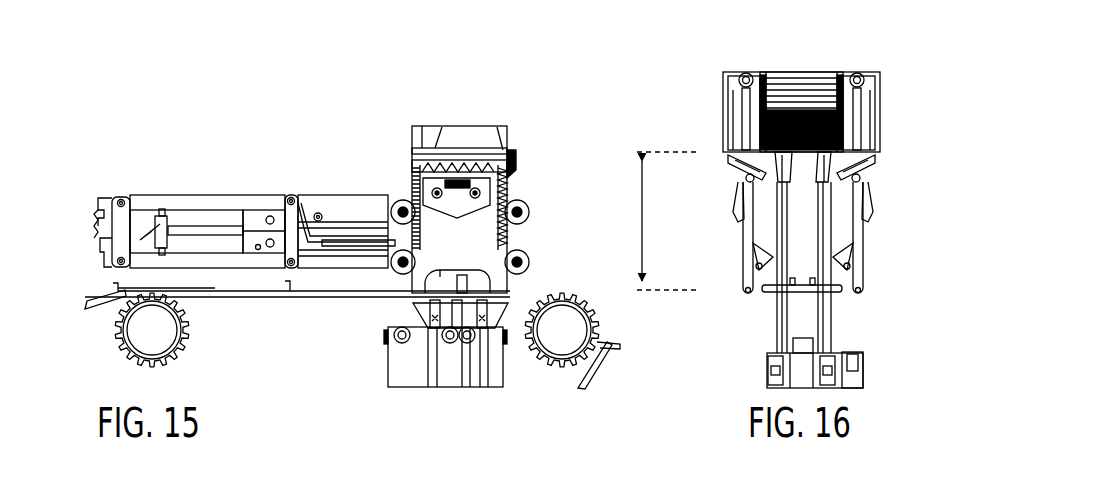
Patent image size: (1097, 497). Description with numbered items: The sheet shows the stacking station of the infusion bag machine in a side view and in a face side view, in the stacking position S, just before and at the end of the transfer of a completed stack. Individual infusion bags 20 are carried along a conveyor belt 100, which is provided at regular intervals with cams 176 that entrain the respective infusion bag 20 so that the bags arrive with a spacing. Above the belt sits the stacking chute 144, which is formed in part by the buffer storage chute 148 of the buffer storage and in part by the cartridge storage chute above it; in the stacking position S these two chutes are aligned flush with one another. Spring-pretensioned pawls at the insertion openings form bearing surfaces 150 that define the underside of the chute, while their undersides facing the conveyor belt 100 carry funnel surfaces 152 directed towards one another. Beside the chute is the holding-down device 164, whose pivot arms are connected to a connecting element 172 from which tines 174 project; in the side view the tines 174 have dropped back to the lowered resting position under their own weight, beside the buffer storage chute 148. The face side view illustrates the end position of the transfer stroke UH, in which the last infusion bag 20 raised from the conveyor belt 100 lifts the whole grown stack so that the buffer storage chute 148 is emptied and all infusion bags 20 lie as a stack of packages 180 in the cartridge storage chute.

In FIG. 15, the holding-down device 164 is at (196, 176).
In FIG. 15, the connecting element 172 is at (297, 203).
In FIG. 15, the tines 174 is at (358, 250).
In FIG. 15, the stacking chute 144 is at (458, 116).
In FIG. 16, the stacking chute 144 is at (846, 61).
In FIG. 15, the cams 176 is at (289, 292).
In FIG. 15, the conveyor belt 100 is at (598, 371).
In FIG. 16, the conveyor belt 100 is at (800, 317).
In FIG. 16, the stack of packages 180 is at (748, 72).
In FIG. 16, the buffer storage chute 148 is at (878, 62).
In FIG. 16, the bearing surfaces 150 is at (860, 147).
In FIG. 16, the funnel surfaces 152 is at (823, 272).
In FIG. 16, the infusion bag 20 is at (833, 293).
In FIG. 16, the stacking position S is at (908, 180).
In FIG. 16, the transfer stroke UH is at (664, 221).